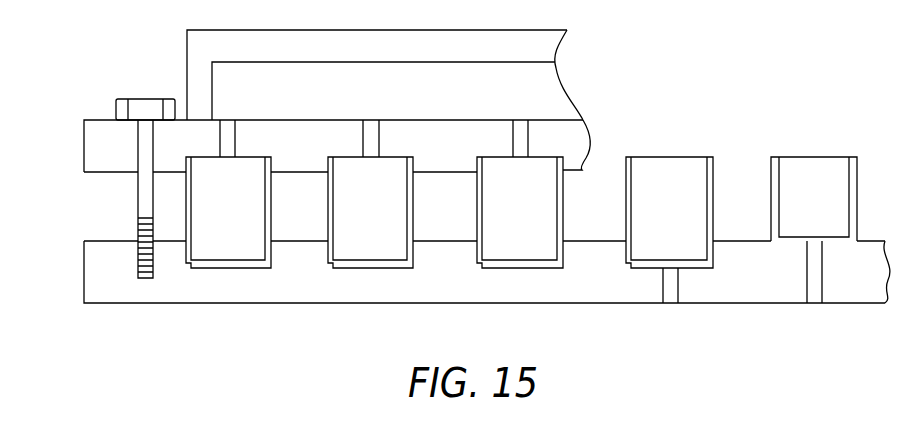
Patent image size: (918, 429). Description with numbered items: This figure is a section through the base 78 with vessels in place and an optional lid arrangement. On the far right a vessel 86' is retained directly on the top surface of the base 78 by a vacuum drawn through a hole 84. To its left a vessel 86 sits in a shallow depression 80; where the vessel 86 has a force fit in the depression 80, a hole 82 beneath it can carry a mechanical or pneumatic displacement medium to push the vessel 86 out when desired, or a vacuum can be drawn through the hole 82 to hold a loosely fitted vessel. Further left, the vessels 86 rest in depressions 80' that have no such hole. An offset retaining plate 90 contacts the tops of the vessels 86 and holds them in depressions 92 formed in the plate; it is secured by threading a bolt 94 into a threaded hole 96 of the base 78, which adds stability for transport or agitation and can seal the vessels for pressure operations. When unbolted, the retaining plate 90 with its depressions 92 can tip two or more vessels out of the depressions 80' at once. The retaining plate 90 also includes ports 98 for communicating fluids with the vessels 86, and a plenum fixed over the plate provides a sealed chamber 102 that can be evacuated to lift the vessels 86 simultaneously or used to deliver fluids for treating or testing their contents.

The base 78 is at (108, 290).
The depression 80 is at (724, 255).
The depression 80' is at (374, 273).
The hole 82 is at (678, 287).
The hole 84 is at (822, 293).
The vessel 86 is at (449, 231).
The vessel 86' is at (814, 218).
The offset retaining plate 90 is at (84, 146).
The depression 92 is at (415, 165).
The bolt 94 is at (138, 183).
The threaded hole 96 is at (138, 257).
The port 98 is at (237, 143).
The sealed chamber 102 is at (555, 82).